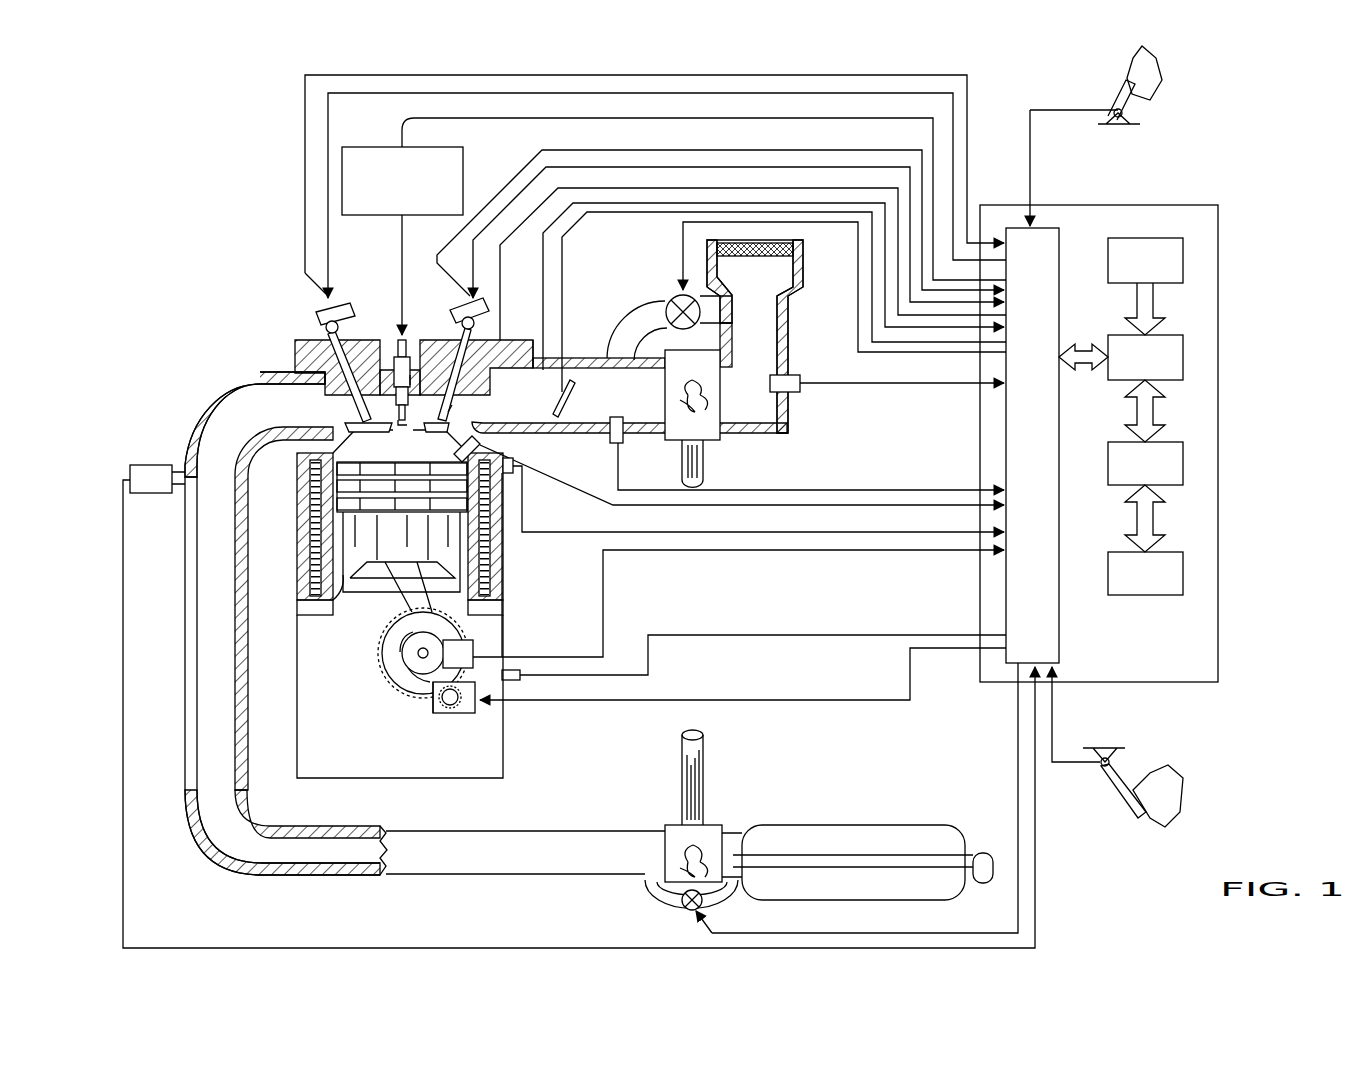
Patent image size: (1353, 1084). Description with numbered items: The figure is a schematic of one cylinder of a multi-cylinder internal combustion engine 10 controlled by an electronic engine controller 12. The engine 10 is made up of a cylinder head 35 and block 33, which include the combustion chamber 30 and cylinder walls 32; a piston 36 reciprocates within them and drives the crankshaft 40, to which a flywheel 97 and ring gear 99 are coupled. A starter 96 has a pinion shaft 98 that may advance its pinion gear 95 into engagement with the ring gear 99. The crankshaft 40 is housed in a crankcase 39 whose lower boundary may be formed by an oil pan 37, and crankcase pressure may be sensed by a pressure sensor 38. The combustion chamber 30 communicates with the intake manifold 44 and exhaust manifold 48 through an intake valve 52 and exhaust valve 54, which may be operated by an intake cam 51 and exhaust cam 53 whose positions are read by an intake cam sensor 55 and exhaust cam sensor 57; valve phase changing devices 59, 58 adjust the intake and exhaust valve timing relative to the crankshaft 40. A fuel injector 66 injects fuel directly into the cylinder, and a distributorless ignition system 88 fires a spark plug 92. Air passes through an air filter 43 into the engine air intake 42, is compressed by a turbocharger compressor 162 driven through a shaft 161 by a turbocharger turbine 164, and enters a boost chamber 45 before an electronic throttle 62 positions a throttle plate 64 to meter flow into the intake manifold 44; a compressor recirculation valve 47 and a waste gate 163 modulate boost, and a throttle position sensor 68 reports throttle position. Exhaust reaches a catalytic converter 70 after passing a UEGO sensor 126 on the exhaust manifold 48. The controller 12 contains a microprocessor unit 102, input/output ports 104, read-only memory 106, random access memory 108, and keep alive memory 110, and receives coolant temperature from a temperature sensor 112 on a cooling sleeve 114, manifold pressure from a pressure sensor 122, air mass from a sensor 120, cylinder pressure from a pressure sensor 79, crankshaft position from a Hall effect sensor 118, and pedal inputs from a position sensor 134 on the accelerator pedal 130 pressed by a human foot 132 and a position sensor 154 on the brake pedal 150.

The internal combustion engine 10 is at (232, 290).
The electronic engine controller 12 is at (1210, 205).
The combustion chamber 30 is at (400, 445).
The cylinder walls 32 is at (340, 602).
The block 33 is at (294, 490).
The cylinder head 35 is at (291, 340).
The piston 36 is at (385, 555).
The oil pan 37 is at (503, 760).
The pressure sensor 38 is at (520, 677).
The crankcase 39 is at (312, 700).
The crankshaft 40 is at (410, 676).
The engine air intake 42 is at (628, 264).
The air filter 43 is at (775, 258).
The intake manifold 44 is at (533, 412).
The boost chamber 45 is at (638, 412).
The compressor recirculation valve 47 is at (672, 298).
The exhaust manifold 48 is at (276, 420).
The intake cam 51 is at (474, 292).
The intake valve 52 is at (452, 405).
The exhaust cam 53 is at (346, 300).
The exhaust valve 54 is at (295, 378).
The intake cam sensor 55 is at (482, 327).
The exhaust cam sensor 57 is at (322, 315).
The valve phase changing device 58 is at (340, 322).
The valve phase changing device 59 is at (480, 312).
The electronic throttle 62 is at (564, 398).
The throttle plate 64 is at (558, 405).
The fuel injector 66 is at (490, 455).
The throttle position sensor 68 is at (532, 368).
The catalytic converter 70 is at (782, 825).
The pressure sensor 79 is at (412, 375).
The distributorless ignition system 88 is at (360, 147).
The spark plug 92 is at (397, 340).
The pinion gear 95 is at (453, 714).
The starter 96 is at (470, 714).
The flywheel 97 is at (401, 665).
The pinion shaft 98 is at (440, 710).
The ring gear 99 is at (415, 695).
The microprocessor unit 102 is at (1183, 358).
The input/output ports 104 is at (1060, 236).
The read-only memory 106 is at (1183, 260).
The random access memory 108 is at (1183, 462).
The keep alive memory 110 is at (1183, 572).
The temperature sensor 112 is at (513, 470).
The cooling sleeve 114 is at (490, 555).
The Hall effect sensor 118 is at (470, 645).
The air mass sensor 120 is at (796, 376).
The pressure sensor 122 is at (610, 440).
The Universal Exhaust Gas Oxygen sensor 126 is at (130, 466).
The accelerator pedal 130 is at (1100, 90).
The human foot 132 is at (1155, 65).
The position sensor 134 is at (1125, 110).
The brake pedal 150 is at (1122, 805).
The position sensor 154 is at (1100, 760).
The shaft 161 is at (682, 460).
The turbocharger compressor 162 is at (705, 440).
The waste gate 163 is at (685, 908).
The turbocharger turbine 164 is at (668, 825).